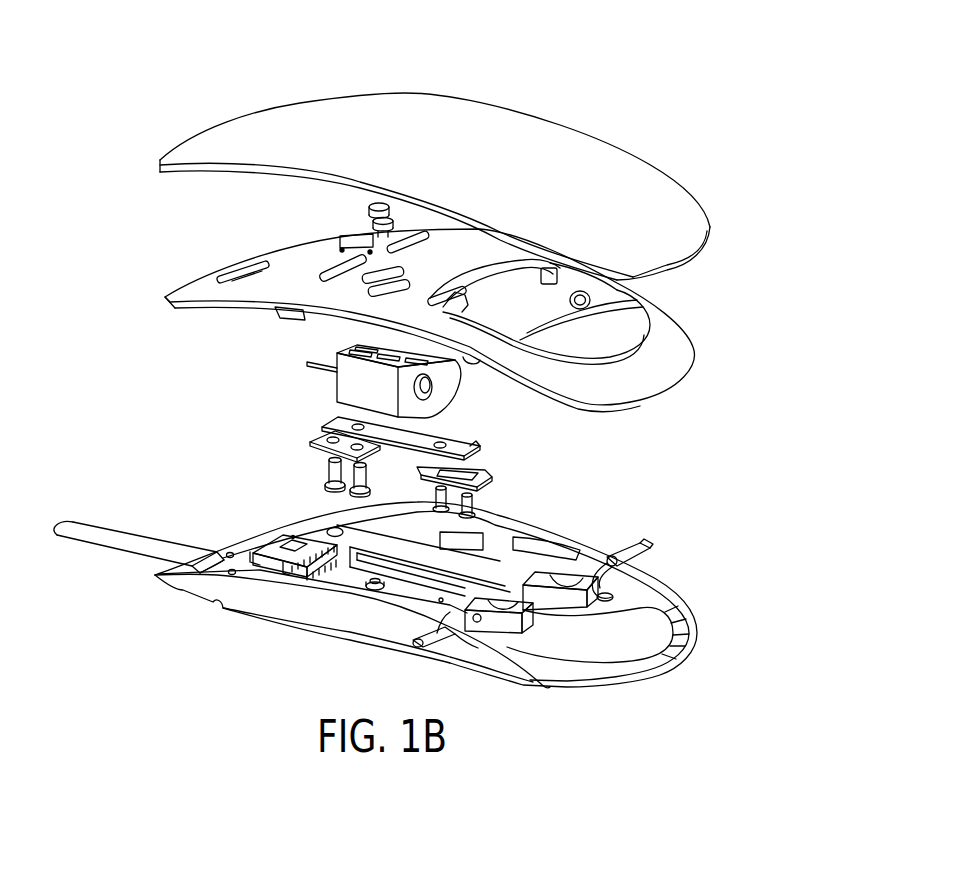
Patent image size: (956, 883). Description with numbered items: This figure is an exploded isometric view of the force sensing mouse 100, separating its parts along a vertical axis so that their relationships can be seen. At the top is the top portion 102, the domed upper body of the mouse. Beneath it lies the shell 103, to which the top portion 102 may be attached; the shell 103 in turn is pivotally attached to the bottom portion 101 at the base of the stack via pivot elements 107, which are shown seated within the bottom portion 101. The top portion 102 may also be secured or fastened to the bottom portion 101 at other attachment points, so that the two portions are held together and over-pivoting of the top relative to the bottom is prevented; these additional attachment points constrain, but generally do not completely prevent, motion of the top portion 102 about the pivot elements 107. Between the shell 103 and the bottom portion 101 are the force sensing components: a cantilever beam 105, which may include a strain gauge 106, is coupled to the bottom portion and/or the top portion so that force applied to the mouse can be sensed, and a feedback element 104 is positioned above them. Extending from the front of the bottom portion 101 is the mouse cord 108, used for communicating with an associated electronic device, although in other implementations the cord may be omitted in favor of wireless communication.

The force sensing mouse 100 is at (626, 67).
The bottom portion 101 is at (323, 612).
The top portion 102 is at (358, 113).
The shell 103 is at (676, 352).
The feedback element 104 is at (352, 380).
The cantilever beam 105 is at (460, 447).
The strain gauge 106 is at (408, 437).
The pivot elements 107 is at (498, 600).
The mouse cord 108 is at (122, 542).